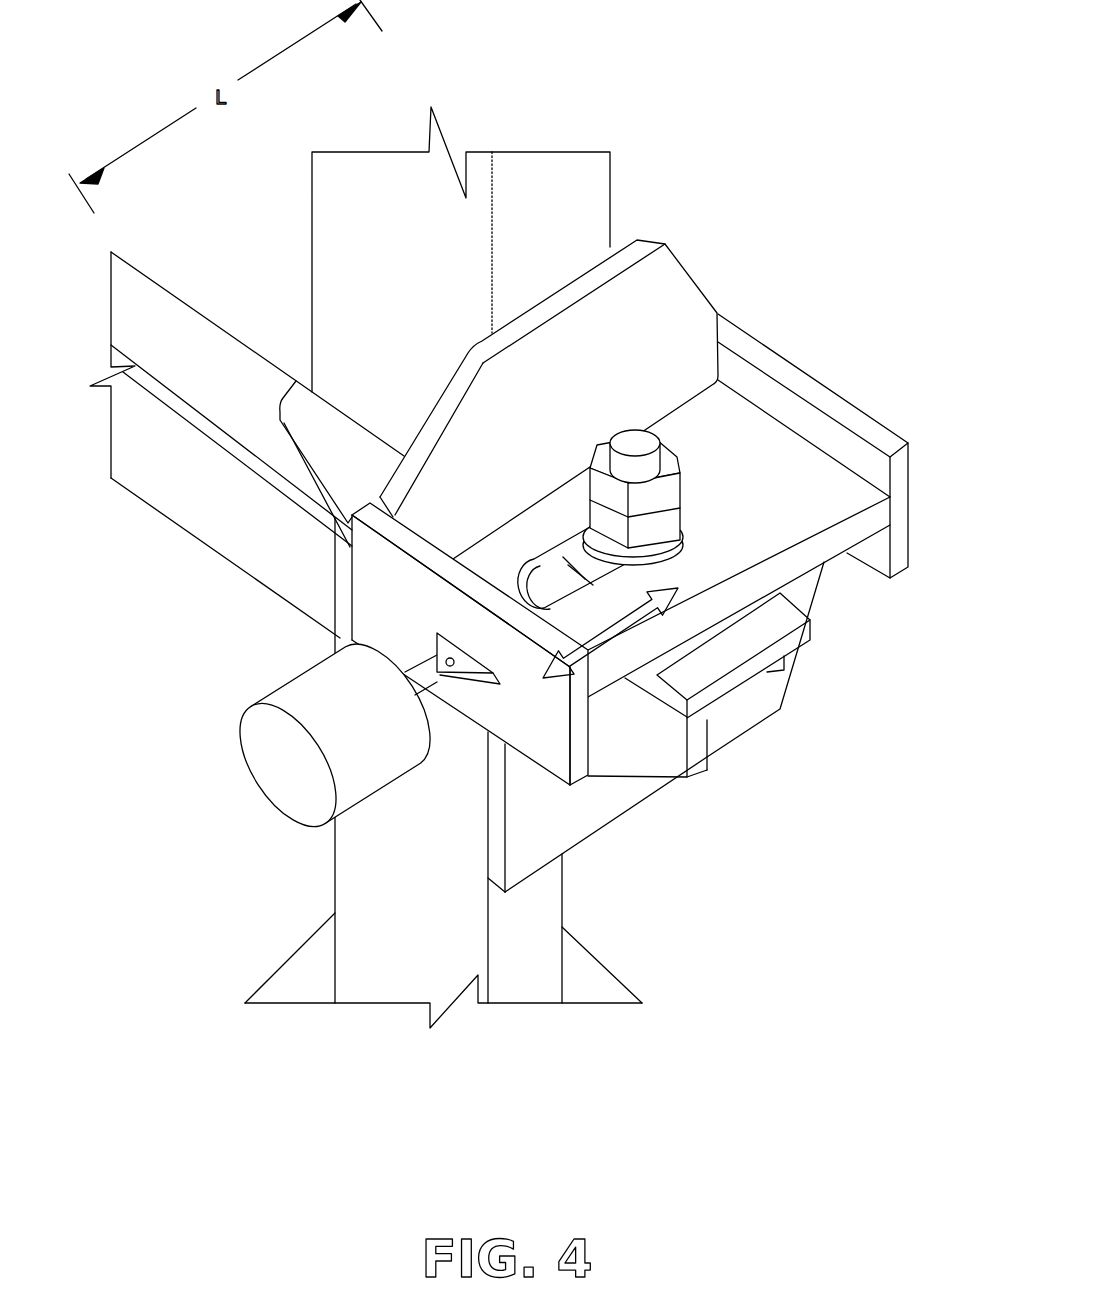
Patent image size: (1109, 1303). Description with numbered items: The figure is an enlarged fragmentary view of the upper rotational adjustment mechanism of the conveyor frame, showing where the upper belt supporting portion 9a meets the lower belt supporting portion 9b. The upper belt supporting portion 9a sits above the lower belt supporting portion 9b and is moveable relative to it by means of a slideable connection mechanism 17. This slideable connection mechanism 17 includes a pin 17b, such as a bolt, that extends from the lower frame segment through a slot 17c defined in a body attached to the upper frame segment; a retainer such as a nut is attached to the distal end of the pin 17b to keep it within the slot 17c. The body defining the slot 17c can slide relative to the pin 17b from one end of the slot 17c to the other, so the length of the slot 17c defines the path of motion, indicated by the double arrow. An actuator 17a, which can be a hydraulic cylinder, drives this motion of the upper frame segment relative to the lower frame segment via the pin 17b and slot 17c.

The upper belt supporting portion 9a is at (630, 210).
The lower belt supporting portion 9b is at (601, 921).
The slideable connection mechanism 17 is at (869, 350).
The actuator 17a is at (255, 752).
The pin 17b is at (716, 488).
The slot 17c is at (543, 582).